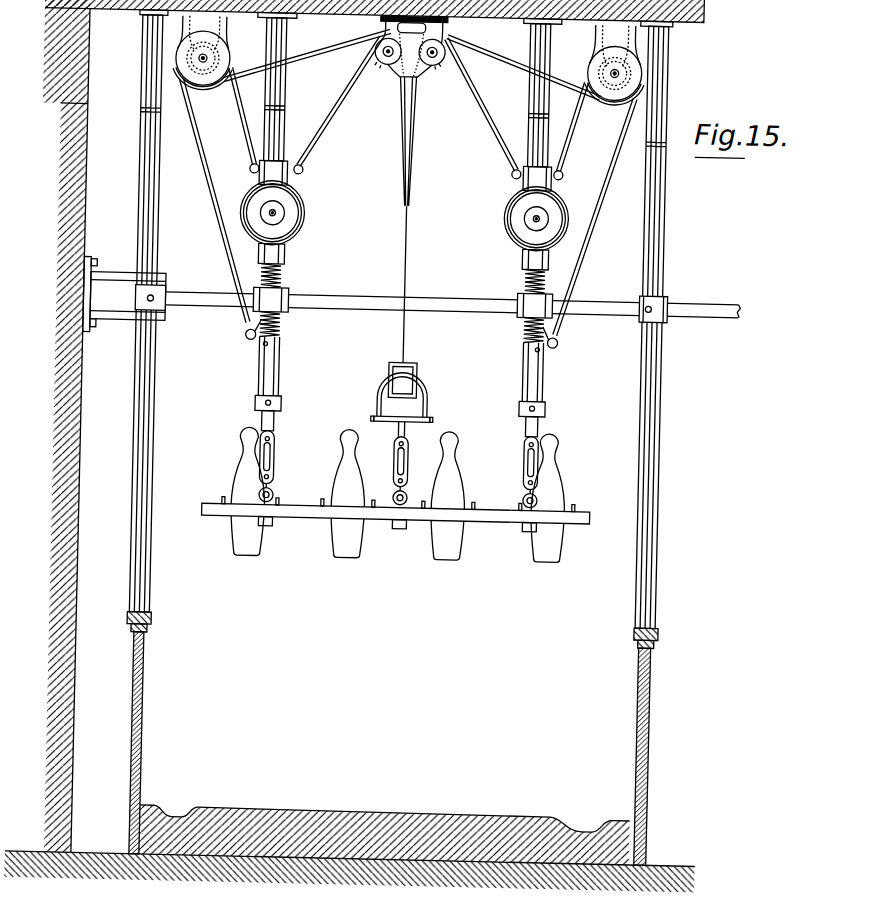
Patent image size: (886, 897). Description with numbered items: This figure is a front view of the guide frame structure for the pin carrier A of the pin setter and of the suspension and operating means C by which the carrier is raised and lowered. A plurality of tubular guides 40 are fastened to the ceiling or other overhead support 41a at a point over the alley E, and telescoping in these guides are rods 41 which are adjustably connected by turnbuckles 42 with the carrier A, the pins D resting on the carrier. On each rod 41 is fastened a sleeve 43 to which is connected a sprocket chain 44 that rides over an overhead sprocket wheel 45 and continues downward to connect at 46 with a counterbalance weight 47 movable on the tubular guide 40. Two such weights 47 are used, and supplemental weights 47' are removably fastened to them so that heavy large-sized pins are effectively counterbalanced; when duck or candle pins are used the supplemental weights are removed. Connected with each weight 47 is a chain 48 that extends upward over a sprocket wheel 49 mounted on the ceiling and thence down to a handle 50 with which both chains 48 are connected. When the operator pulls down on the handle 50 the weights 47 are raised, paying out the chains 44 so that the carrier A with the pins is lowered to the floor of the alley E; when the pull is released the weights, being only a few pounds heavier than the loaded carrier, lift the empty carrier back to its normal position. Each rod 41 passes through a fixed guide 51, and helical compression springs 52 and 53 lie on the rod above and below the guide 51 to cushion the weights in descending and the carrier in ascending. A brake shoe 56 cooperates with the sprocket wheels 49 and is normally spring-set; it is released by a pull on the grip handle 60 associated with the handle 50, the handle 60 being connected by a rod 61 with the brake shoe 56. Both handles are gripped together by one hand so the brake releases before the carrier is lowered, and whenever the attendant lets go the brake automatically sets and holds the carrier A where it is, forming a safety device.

The overhead support 41a is at (378, 14).
The overhead sprocket wheel 45 is at (210, 86).
The tubular guide 40 is at (284, 133).
The chain 48 is at (333, 116).
The sprocket wheel 49 is at (384, 70).
The brake shoe 56 is at (415, 82).
The connection 46 is at (253, 167).
The counterbalance weight 47 is at (404, 215).
The supplemental weight 47' is at (403, 235).
The sprocket chain 44 is at (226, 233).
The helical compression spring 52 is at (289, 272).
The fixed guide 51 is at (294, 309).
The helical compression spring 53 is at (288, 330).
The rod 61 is at (413, 316).
The handle 60 is at (422, 360).
The handle 50 is at (436, 380).
The sleeve 43 is at (288, 378).
The rod 41 is at (284, 420).
The turnbuckle 42 is at (285, 462).
The pin D is at (398, 495).
The carrier A is at (318, 516).
The suspension and operating means C is at (465, 165).
The alley E is at (384, 826).